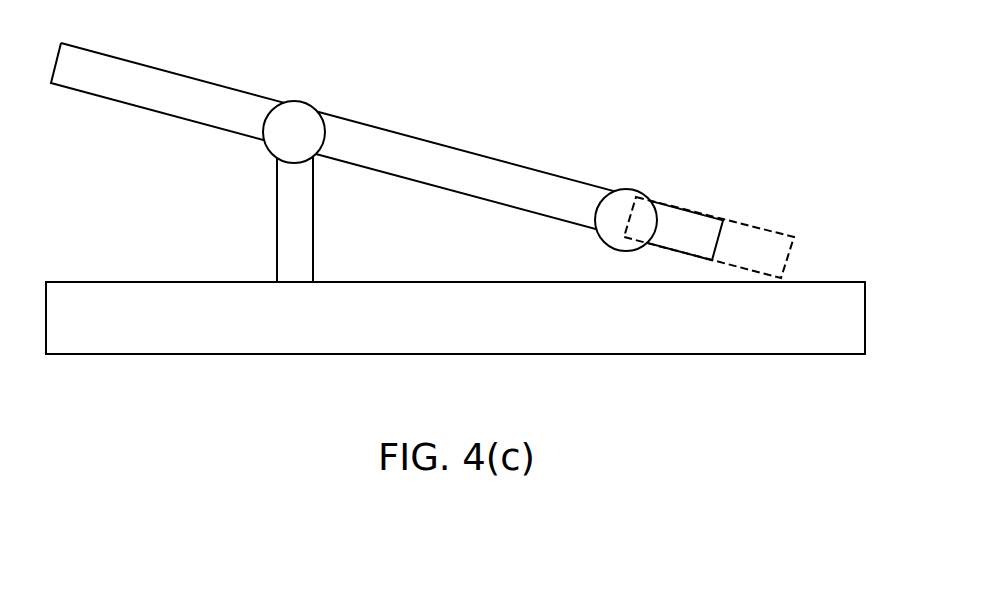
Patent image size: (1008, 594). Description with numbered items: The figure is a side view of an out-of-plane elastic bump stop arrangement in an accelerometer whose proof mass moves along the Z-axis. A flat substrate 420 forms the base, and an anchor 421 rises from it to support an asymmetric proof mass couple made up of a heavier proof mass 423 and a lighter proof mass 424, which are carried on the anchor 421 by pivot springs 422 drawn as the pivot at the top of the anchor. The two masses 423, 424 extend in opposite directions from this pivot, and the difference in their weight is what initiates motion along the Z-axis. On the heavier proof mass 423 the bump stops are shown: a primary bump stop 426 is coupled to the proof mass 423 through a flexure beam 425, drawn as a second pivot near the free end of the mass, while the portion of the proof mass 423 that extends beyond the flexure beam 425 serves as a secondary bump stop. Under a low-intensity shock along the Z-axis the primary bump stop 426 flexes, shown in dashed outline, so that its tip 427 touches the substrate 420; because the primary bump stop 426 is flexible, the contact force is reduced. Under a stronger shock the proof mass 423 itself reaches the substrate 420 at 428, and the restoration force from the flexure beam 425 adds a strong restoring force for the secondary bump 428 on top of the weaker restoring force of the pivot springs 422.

The substrate 420 is at (161, 339).
The anchor 421 is at (277, 215).
The pivot springs 422 is at (300, 117).
The proof mass 423 is at (427, 162).
The proof mass 424 is at (198, 93).
The flexure beam 425 is at (625, 213).
The primary bump stop 426 is at (760, 248).
The tip of the primary bump stop 427 is at (780, 282).
The secondary bump contact point 428 is at (717, 282).